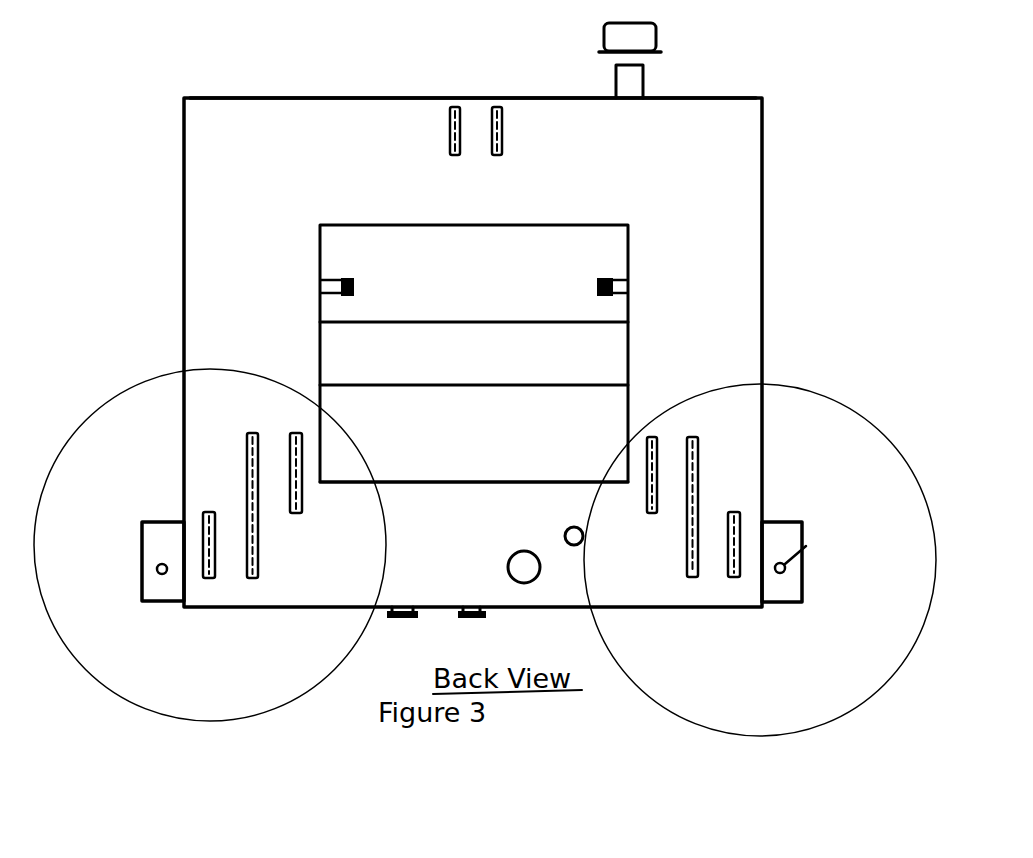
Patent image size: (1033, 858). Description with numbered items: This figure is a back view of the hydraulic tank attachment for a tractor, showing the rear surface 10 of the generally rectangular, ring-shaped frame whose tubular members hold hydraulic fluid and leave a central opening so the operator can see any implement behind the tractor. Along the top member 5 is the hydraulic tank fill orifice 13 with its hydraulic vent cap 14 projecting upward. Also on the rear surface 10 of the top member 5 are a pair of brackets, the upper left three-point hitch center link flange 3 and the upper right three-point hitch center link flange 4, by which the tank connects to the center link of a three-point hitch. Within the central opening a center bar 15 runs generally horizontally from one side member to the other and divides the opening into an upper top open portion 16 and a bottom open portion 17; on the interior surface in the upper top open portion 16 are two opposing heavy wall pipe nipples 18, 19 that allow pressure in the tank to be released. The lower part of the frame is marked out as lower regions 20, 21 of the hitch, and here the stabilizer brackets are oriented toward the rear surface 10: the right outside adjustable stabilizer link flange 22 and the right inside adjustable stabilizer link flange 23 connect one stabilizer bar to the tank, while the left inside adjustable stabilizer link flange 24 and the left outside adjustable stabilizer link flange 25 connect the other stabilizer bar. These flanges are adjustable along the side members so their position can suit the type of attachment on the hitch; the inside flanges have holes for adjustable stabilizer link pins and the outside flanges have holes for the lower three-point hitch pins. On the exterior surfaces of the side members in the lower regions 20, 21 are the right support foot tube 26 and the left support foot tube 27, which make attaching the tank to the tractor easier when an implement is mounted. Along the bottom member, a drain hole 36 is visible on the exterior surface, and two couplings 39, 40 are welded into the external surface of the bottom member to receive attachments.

The upper left three-point hitch center link flange 3 is at (453, 100).
The upper right three-point hitch center link flange 4 is at (494, 97).
The top member 5 is at (312, 90).
The rear surface 10 is at (473, 352).
The hydraulic tank fill orifice 13 is at (658, 82).
The hydraulic vent cap 14 is at (672, 33).
The center bar 15 is at (474, 353).
The upper top open portion 16 is at (474, 353).
The bottom open portion 17 is at (474, 453).
The heavy wall pipe nipple 18 is at (408, 298).
The heavy wall pipe nipple 19 is at (597, 290).
The lower region 20 is at (210, 537).
The lower region 21 is at (760, 542).
The right outside adjustable stabilizer link flange 22 is at (250, 425).
The right inside adjustable stabilizer link flange 23 is at (297, 430).
The left inside adjustable stabilizer link flange 24 is at (658, 428).
The left outside adjustable stabilizer link flange 25 is at (760, 401).
The right support foot tube 26 is at (144, 600).
The left support foot tube 27 is at (800, 578).
The drain hole 36 is at (403, 615).
The coupling 39 is at (541, 570).
The coupling 40 is at (594, 541).